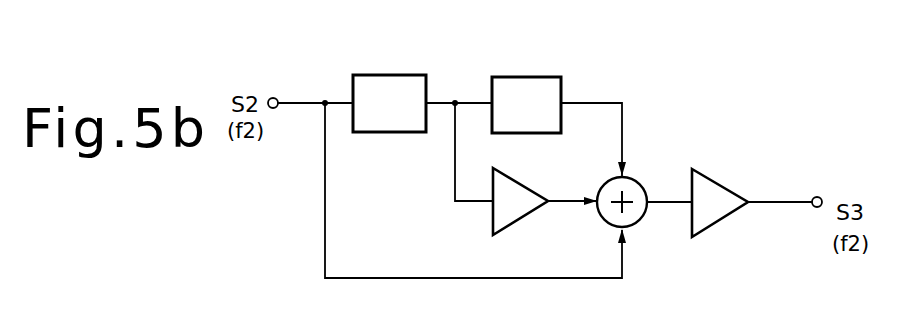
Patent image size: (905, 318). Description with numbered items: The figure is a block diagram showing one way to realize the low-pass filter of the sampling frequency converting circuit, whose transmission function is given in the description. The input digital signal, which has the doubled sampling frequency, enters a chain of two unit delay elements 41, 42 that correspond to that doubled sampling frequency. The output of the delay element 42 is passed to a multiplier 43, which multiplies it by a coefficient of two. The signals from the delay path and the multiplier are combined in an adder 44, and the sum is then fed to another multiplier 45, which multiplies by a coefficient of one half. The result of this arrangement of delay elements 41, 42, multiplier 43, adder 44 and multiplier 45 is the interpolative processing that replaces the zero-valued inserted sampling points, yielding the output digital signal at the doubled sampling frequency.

The unit delay element 41 is at (366, 75).
The unit delay element 42 is at (514, 77).
The multiplier 43 is at (508, 227).
The adder 44 is at (637, 183).
The multiplier 45 is at (713, 223).